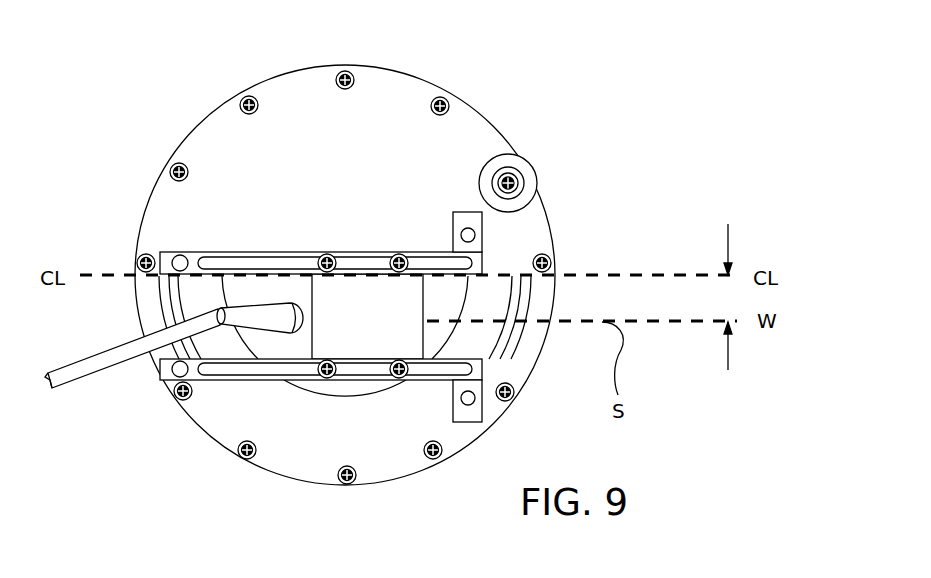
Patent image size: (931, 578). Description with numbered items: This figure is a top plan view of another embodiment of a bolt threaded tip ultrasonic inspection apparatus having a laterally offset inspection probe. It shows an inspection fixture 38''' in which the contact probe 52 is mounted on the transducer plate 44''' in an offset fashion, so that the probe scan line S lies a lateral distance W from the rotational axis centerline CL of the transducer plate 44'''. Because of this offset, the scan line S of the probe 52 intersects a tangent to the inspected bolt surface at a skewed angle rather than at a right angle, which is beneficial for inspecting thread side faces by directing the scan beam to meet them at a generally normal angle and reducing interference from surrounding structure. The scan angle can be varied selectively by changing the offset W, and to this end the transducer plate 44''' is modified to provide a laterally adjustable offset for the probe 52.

The inspection fixture 38''' is at (311, 290).
The transducer plate 44''' is at (533, 133).
The contact probe 52 is at (368, 327).